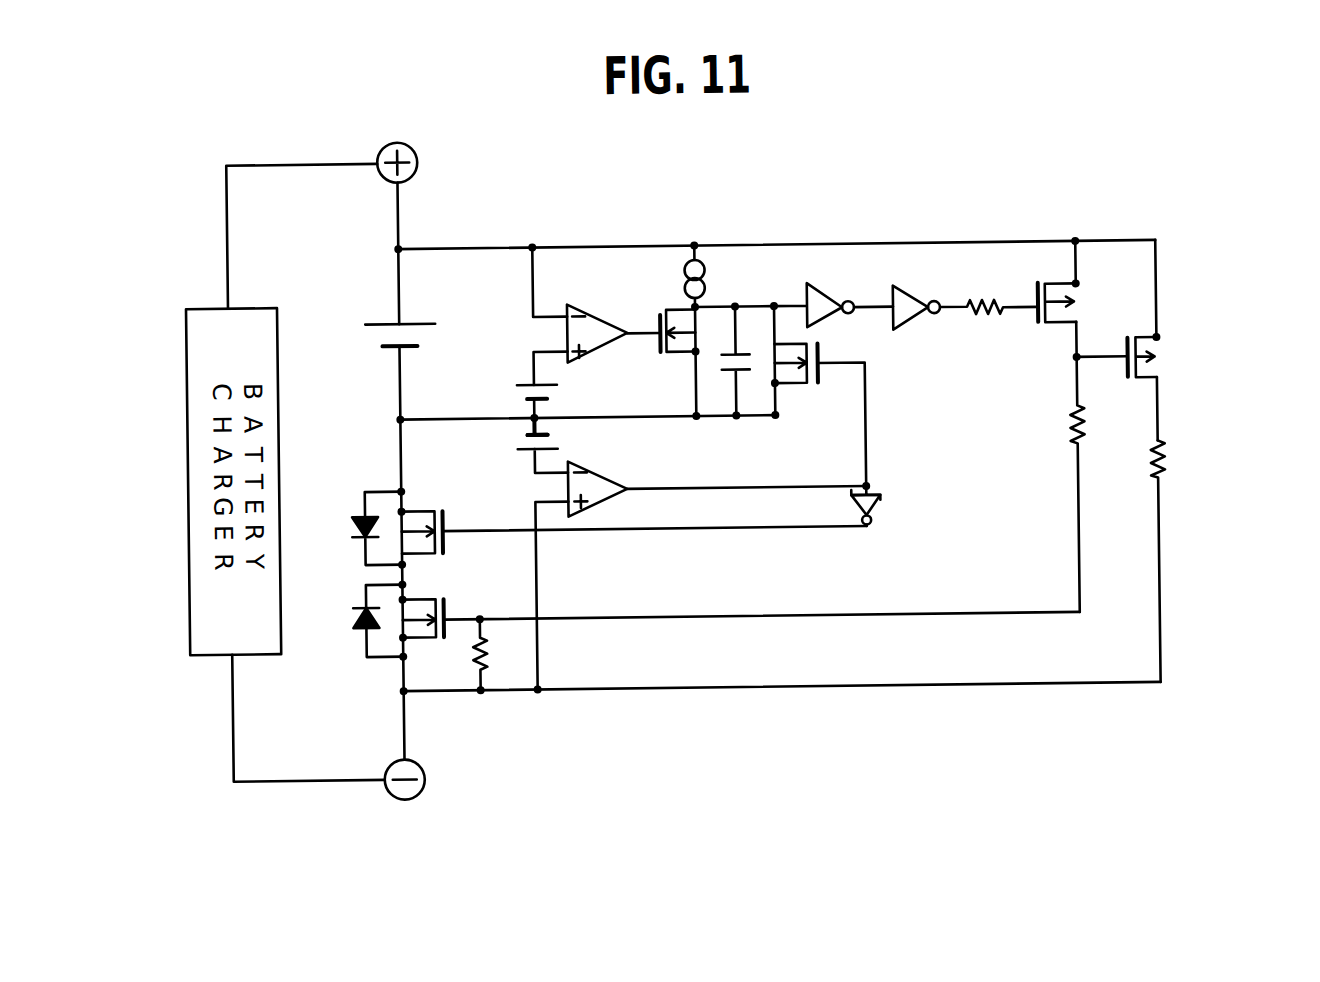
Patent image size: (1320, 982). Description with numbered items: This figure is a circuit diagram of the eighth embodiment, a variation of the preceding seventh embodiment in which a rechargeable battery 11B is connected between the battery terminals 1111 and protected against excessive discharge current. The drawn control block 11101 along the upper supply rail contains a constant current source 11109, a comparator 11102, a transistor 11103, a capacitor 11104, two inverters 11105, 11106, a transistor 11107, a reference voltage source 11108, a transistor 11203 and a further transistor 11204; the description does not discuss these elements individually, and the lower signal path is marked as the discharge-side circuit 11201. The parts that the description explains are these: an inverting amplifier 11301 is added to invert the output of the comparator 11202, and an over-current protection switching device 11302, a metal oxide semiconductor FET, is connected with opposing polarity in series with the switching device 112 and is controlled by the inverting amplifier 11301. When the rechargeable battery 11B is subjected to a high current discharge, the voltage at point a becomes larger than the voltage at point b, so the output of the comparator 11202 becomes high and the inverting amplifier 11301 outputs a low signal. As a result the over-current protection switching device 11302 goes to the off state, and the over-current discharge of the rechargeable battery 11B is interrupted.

The battery terminals 1111 is at (422, 153).
The rechargeable battery 11B is at (363, 334).
The charge control circuit 11101 is at (877, 220).
The constant current source 11109 is at (688, 262).
The comparator 11102 is at (613, 296).
The transistor 11103 is at (657, 352).
The capacitor 11104 is at (747, 351).
The inverter 11105 is at (827, 299).
The inverter 11106 is at (917, 311).
The transistor 11107 is at (1039, 329).
The transistor 11204 is at (1160, 352).
The reference voltage source 11108 is at (524, 380).
The comparator 11202 is at (633, 466).
The transistor 11203 is at (818, 421).
The over-current protection switching device 11302 is at (479, 499).
The switching device 112 is at (448, 600).
The inverting amplifier 11301 is at (873, 506).
The discharge control circuit 11201 is at (774, 506).
The point a is at (545, 707).
The point b is at (527, 423).